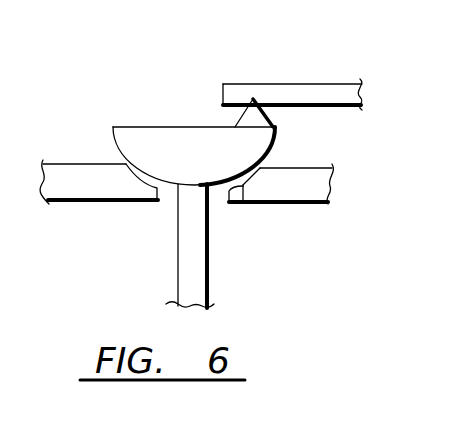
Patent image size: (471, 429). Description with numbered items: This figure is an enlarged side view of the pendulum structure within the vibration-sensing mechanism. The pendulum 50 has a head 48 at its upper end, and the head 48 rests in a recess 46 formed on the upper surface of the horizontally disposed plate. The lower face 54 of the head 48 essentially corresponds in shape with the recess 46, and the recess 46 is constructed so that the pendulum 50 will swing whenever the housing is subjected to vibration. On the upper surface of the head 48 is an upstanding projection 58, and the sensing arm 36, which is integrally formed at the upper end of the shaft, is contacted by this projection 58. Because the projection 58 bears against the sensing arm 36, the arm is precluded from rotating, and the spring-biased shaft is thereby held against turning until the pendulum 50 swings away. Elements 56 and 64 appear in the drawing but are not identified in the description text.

The sensing arm 36 is at (244, 84).
The recess 46 is at (237, 206).
The head 48 is at (168, 127).
The pendulum 50 is at (208, 290).
The lower face 54 is at (173, 186).
The left arm 56 is at (126, 166).
The upstanding projection 58 is at (276, 115).
The right arm 64 is at (298, 168).